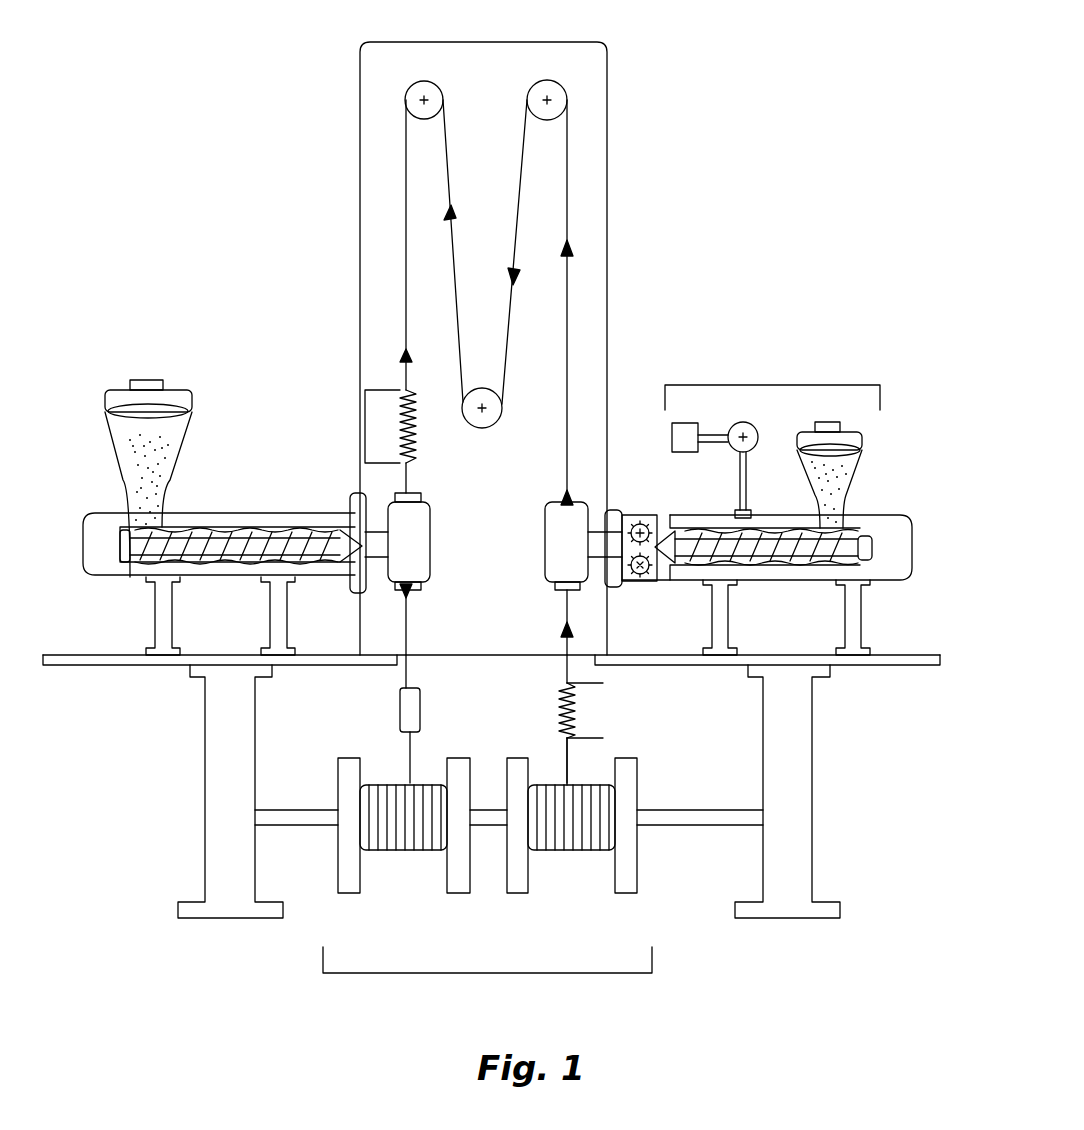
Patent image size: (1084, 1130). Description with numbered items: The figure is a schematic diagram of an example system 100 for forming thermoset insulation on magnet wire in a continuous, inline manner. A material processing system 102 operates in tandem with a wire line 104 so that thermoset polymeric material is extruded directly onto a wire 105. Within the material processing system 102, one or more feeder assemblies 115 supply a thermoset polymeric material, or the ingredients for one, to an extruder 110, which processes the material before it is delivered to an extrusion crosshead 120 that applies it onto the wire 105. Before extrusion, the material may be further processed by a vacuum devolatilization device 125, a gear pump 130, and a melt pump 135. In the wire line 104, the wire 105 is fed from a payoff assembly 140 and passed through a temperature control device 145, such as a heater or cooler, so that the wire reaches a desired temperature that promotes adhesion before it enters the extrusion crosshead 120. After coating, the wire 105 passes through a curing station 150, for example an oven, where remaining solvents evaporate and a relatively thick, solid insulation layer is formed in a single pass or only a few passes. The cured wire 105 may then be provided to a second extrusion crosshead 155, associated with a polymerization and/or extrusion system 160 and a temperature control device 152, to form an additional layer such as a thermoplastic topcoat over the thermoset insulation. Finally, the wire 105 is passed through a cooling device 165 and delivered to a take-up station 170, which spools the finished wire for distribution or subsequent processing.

The system 100 is at (220, 55).
The material processing system 102 is at (772, 388).
The wire line 104 is at (487, 976).
The wire 105 is at (572, 770).
The extruder 110 is at (890, 590).
The feeder assembly 115 is at (866, 456).
The extrusion crosshead 120 is at (577, 510).
The vacuum devolatilization device 125 is at (678, 420).
The gear pump 130 is at (640, 520).
The melt pump 135 is at (660, 585).
The payoff assembly 140 is at (650, 882).
The temperature control device 145 is at (555, 712).
The curing station 150 is at (608, 95).
The temperature control device 152 is at (400, 420).
The extrusion crosshead 155 is at (400, 477).
The polymerization and/or extrusion system 160 is at (128, 350).
The cooling device 165 is at (470, 725).
The take-up station 170 is at (340, 898).